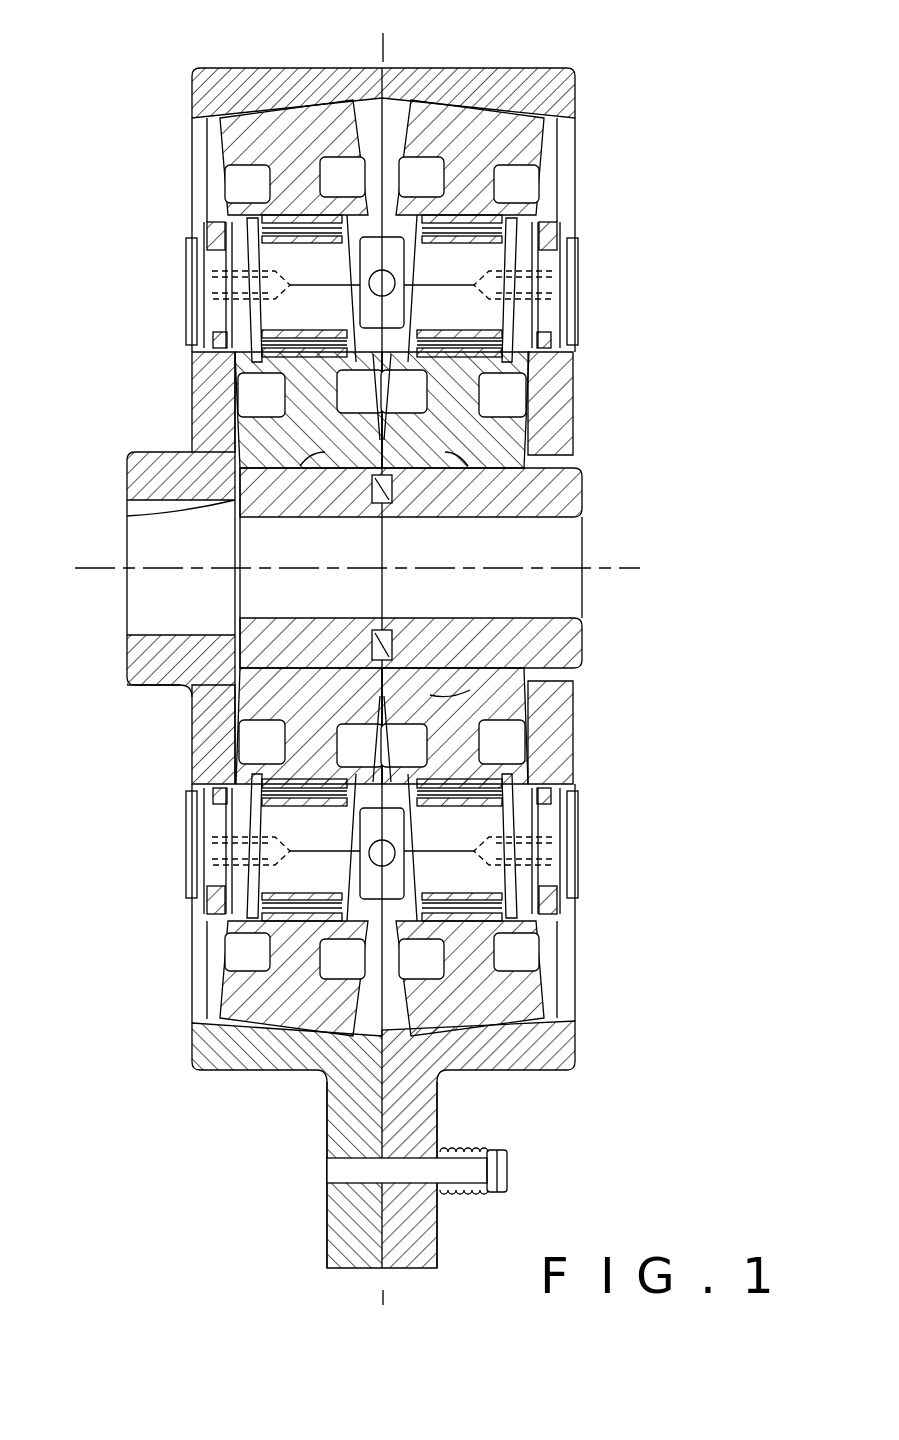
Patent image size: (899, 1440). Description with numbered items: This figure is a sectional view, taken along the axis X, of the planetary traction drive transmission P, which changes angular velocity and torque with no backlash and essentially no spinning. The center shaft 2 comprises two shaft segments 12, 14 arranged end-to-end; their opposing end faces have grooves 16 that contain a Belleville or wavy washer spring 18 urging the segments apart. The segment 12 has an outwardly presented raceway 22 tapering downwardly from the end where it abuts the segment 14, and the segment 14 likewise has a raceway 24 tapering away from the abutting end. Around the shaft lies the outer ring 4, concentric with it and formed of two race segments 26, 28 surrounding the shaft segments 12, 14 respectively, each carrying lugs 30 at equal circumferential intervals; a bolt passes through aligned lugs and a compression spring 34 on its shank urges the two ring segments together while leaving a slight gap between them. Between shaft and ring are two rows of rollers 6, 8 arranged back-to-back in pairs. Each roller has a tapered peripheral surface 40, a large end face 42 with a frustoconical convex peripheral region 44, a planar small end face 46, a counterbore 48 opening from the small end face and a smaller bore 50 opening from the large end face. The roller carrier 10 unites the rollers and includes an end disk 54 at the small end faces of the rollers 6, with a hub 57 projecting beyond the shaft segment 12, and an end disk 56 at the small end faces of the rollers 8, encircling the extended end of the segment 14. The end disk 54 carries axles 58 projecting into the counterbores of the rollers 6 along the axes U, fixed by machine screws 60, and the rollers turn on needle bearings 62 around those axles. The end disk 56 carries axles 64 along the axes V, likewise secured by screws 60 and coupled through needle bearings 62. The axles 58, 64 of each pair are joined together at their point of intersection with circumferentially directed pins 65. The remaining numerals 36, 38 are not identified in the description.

The center shaft 2 is at (376, 25).
The outer ring 4 is at (410, 58).
The roller 6 is at (210, 178).
The roller 8 is at (560, 182).
The roller carrier 10 is at (185, 722).
The shaft segment 12 is at (230, 505).
The shaft segment 14 is at (575, 487).
The groove 16 is at (420, 655).
The washer spring 18 is at (375, 645).
The raceway 22 is at (303, 468).
The raceway 24 is at (476, 470).
The race segment 26 is at (197, 86).
The race segment 28 is at (572, 86).
The lug 30 is at (345, 1215).
The compression spring 34 is at (480, 1146).
The inner race 36 is at (290, 118).
The inner race 38 is at (464, 112).
The tapered peripheral surface 40 is at (240, 118).
The large end face 42 is at (325, 1090).
The peripheral region 44 is at (450, 690).
The small end face 46 is at (195, 990).
The counterbore 48 is at (200, 795).
The bore 50 is at (358, 832).
The end disk 54 is at (205, 397).
The end disk 56 is at (565, 390).
The hub 57 is at (130, 662).
The axle 58 is at (245, 905).
The machine screw 60 is at (195, 872).
The needle bearing 62 is at (275, 942).
The axle 64 is at (555, 908).
The pin 65 is at (397, 850).
The axis U is at (204, 295).
The axis V is at (560, 295).
The planetary traction drive transmission P is at (668, 305).
The axis X is at (343, 568).